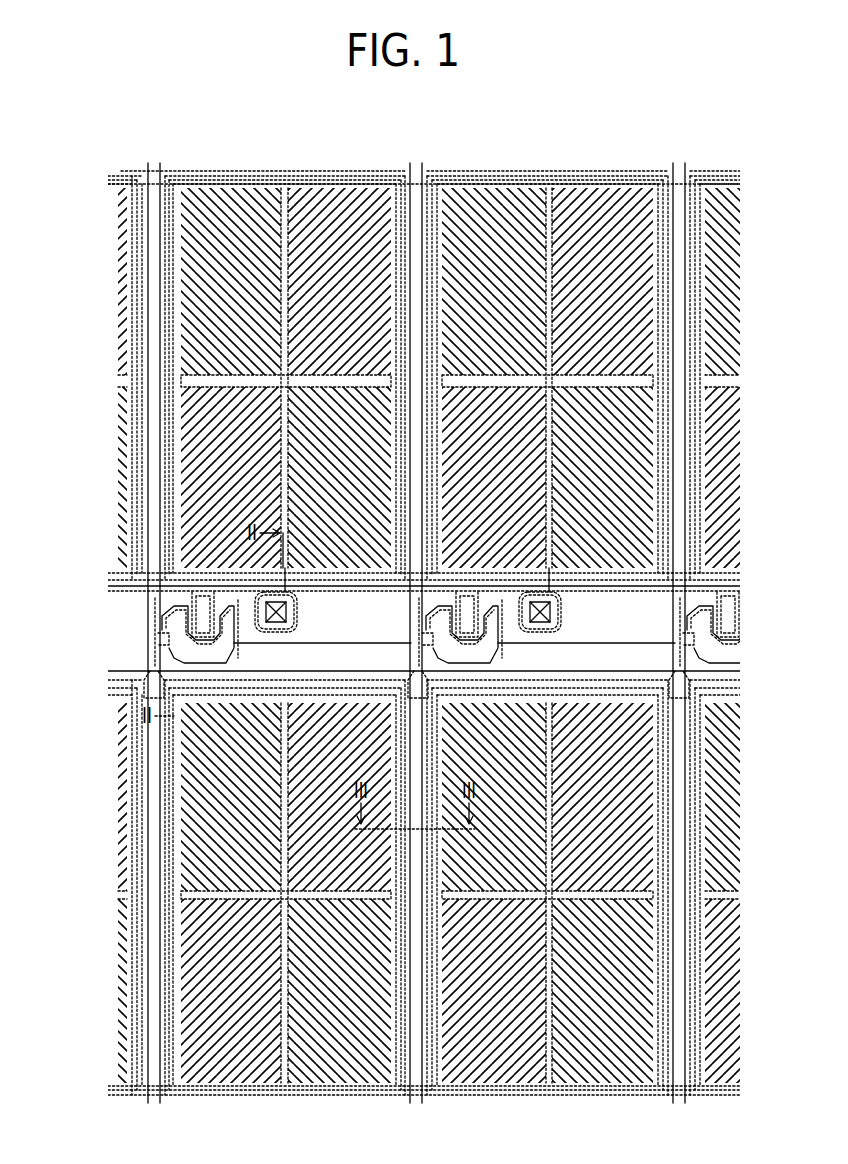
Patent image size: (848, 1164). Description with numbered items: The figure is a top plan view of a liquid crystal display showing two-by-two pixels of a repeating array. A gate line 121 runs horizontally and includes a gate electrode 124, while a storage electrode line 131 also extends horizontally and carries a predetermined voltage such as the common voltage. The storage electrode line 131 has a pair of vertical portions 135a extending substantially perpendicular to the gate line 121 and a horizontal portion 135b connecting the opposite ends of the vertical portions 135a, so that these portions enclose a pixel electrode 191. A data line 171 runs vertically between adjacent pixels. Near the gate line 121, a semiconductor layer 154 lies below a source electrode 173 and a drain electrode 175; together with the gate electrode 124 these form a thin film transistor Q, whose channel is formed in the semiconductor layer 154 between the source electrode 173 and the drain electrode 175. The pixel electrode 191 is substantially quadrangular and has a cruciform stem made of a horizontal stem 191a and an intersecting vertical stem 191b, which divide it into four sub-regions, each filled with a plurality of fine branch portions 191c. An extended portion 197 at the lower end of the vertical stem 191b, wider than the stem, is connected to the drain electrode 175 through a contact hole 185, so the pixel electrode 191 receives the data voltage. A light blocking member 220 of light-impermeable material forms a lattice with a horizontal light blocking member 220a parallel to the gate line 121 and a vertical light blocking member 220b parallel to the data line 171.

The gate line 121 is at (125, 645).
The gate electrode 124 is at (175, 604).
The storage electrode line 131 is at (155, 563).
The vertical portion 135a is at (160, 425).
The horizontal portion 135b is at (253, 166).
The semiconductor layer 154 is at (225, 628).
The data line 171 is at (150, 399).
The source electrode 173 is at (140, 662).
The drain electrode 175 is at (160, 595).
The contact hole 185 is at (290, 615).
The extended portion 197 is at (290, 598).
The pixel electrode 191 is at (208, 538).
The horizontal stem 191a is at (232, 363).
The vertical stem 191b is at (270, 262).
The fine branch portions 191c is at (175, 472).
The light blocking member 220 is at (208, 893).
The horizontal light blocking member 220a is at (208, 820).
The vertical light blocking member 220b is at (59, 905).
The thin film transistor Q is at (227, 648).